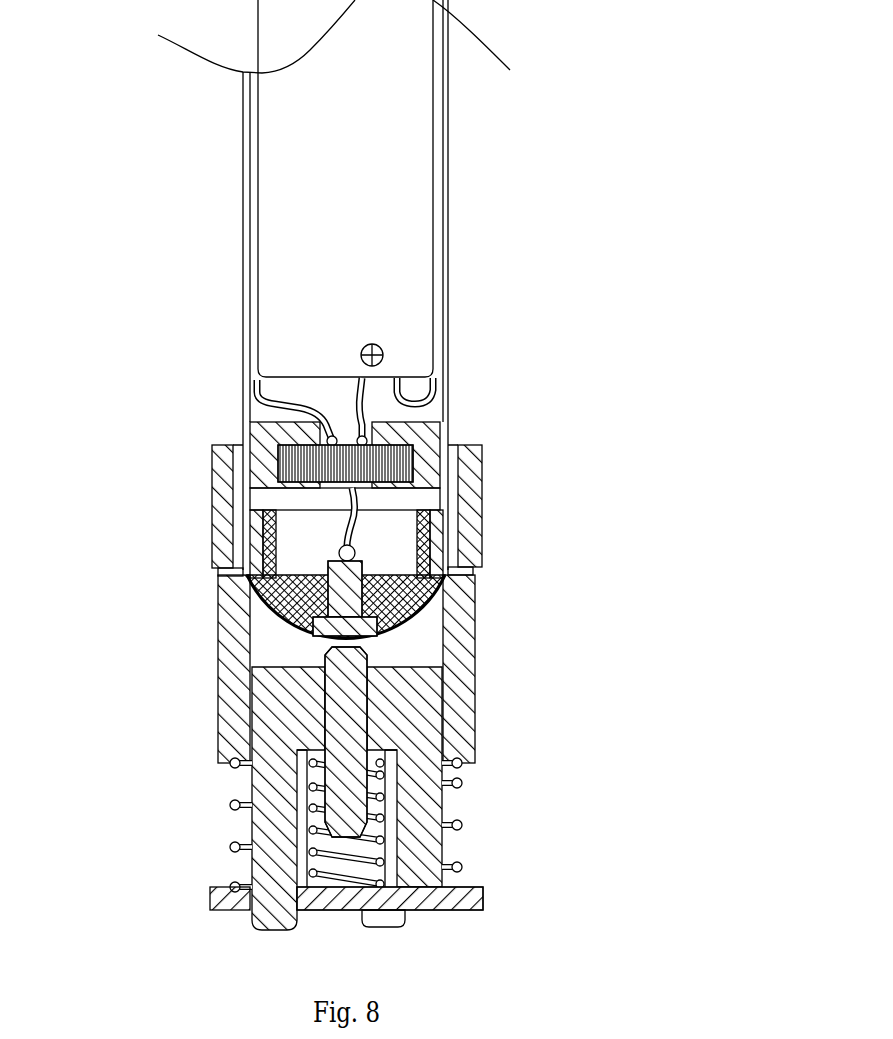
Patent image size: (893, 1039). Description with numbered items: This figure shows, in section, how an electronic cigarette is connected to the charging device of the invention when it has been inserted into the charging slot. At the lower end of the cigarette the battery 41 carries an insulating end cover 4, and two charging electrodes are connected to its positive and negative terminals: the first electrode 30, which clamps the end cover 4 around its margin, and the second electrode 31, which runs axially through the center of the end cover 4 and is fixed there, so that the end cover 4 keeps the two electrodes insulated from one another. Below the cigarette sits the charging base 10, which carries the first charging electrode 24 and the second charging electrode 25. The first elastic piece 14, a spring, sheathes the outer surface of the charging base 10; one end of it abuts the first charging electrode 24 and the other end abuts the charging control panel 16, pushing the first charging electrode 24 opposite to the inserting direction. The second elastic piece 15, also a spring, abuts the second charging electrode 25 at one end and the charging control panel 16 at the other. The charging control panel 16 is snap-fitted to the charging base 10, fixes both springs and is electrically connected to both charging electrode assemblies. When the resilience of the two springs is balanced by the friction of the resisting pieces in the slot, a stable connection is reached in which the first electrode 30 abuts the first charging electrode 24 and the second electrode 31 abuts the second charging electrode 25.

The battery 41 is at (405, 205).
The second electrode 31 is at (345, 590).
The charging base 10 is at (478, 452).
The end cover 4 is at (282, 602).
The first electrode 30 is at (447, 567).
The first charging electrode 24 is at (453, 662).
The second charging electrode 25 is at (347, 793).
The second elastic piece 15 is at (340, 878).
The first elastic piece 14 is at (453, 835).
The charging control panel 16 is at (477, 907).